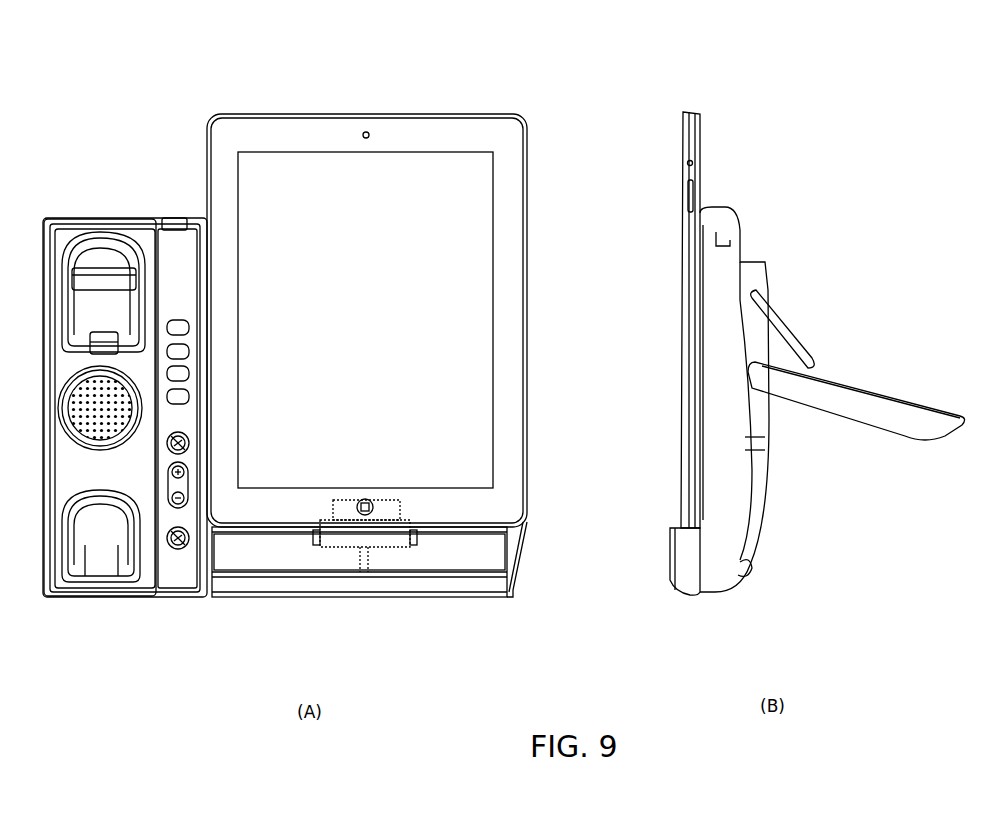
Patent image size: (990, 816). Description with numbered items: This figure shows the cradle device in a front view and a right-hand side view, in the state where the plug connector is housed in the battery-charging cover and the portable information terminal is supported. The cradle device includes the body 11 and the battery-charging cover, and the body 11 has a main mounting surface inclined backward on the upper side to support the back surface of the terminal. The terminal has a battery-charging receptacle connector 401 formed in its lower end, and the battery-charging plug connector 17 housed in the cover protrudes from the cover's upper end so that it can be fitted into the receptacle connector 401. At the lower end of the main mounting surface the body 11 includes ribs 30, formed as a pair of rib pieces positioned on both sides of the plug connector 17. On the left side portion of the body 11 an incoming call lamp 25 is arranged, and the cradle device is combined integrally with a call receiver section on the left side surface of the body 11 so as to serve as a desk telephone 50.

The body 11 is at (750, 490).
The battery-charging plug connector 17 is at (378, 512).
The incoming call lamp 25 is at (178, 245).
The ribs 30 is at (312, 546).
The receptacle connector 401 is at (358, 498).
The desk telephone 50 is at (90, 205).